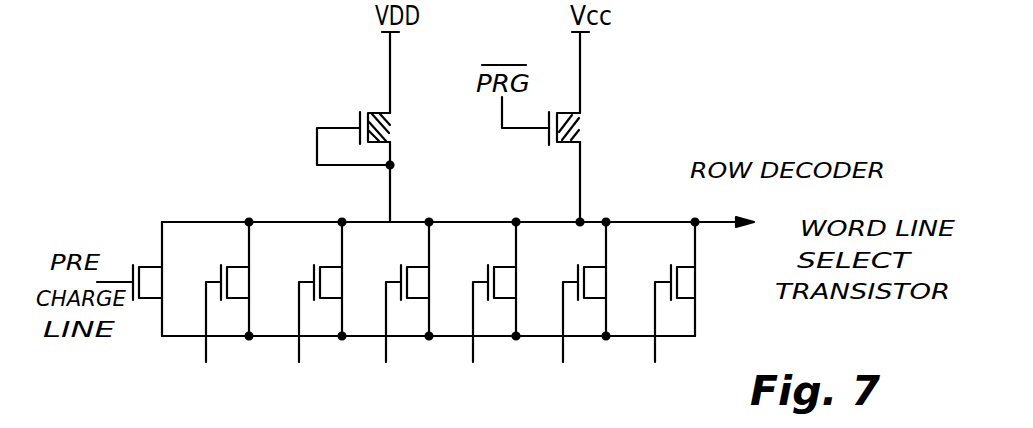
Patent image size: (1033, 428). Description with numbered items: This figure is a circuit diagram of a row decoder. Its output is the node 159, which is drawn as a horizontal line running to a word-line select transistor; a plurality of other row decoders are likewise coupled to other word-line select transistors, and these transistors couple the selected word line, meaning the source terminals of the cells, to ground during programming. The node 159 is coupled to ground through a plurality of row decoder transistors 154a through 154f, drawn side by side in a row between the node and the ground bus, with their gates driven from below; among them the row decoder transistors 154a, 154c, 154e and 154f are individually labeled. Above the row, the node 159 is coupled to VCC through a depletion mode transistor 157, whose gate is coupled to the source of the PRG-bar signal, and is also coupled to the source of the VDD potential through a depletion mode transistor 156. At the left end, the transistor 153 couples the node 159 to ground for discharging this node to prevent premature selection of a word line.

The transistor 153 is at (141, 278).
The row decoder transistor 154a is at (229, 279).
The row decoder transistor 154c is at (409, 281).
The row decoder transistor 154e is at (586, 281).
The row decoder transistor 154f is at (680, 286).
The depletion mode transistor 156 is at (376, 116).
The depletion mode transistor 157 is at (575, 127).
The node 159 is at (710, 222).